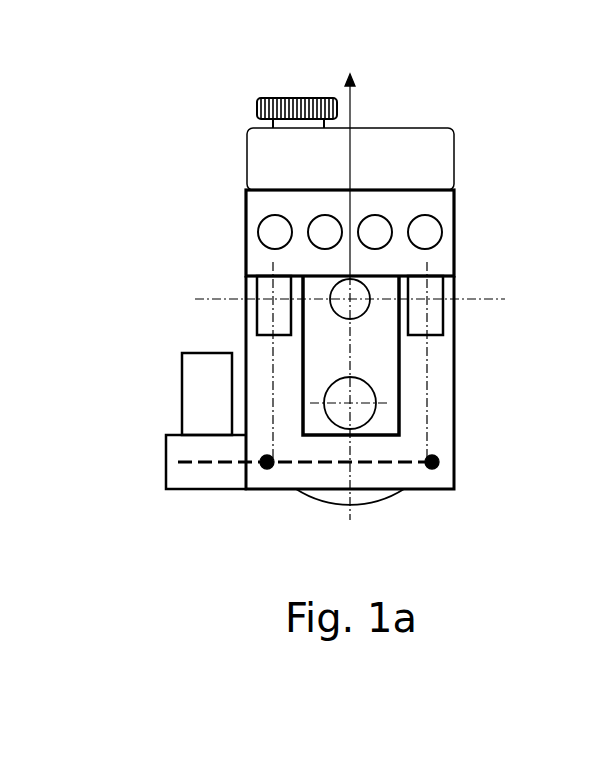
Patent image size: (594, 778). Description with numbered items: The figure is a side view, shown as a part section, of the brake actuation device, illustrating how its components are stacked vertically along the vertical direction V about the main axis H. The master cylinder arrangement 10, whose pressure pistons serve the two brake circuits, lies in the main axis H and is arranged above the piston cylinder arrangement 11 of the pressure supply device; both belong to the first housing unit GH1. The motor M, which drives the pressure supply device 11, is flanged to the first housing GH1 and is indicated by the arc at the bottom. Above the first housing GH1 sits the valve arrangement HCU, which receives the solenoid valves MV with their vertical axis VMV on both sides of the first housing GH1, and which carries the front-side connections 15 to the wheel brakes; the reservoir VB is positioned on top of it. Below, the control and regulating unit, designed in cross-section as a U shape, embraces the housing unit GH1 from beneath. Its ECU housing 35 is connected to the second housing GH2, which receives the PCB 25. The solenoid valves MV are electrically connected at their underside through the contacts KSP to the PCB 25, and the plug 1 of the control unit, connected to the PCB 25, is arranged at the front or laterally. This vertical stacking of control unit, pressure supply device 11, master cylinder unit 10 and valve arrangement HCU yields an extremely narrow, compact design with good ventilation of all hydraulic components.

The plug 1 is at (196, 404).
The master cylinder arrangement 10 is at (347, 290).
The piston cylinder arrangement of the pressure supply device 11 is at (337, 415).
The front-side connections 15 is at (277, 228).
The PCB 25 is at (296, 464).
The ECU housing 35 is at (241, 478).
The reservoir VB is at (246, 160).
The valve arrangement HCU is at (246, 228).
The first housing unit GH1 is at (388, 298).
The second housing GH2 is at (246, 297).
The solenoid valves MV is at (263, 322).
The vertical axis of the solenoid valves VMV is at (495, 232).
The vertical direction V is at (350, 284).
The main axis H is at (473, 300).
The motor M is at (363, 500).
The contacts KSP is at (433, 465).